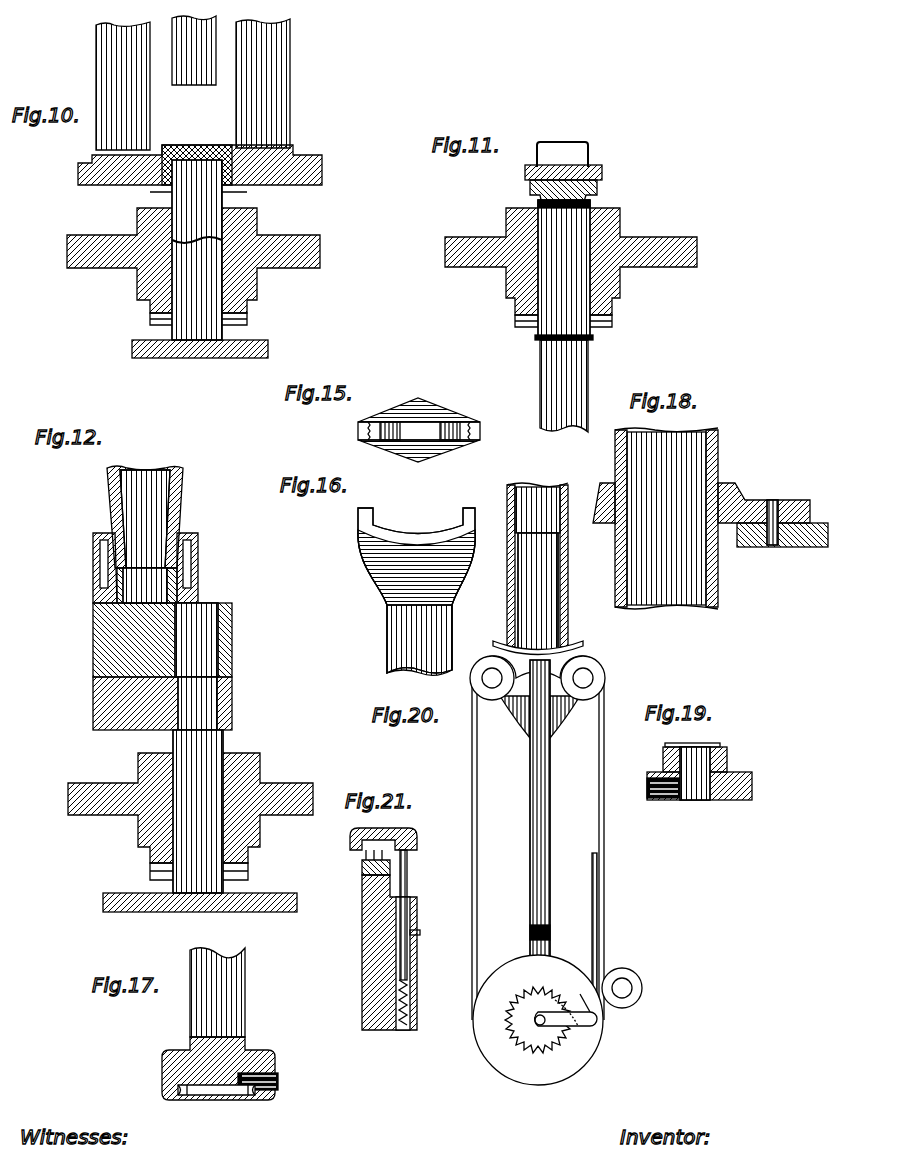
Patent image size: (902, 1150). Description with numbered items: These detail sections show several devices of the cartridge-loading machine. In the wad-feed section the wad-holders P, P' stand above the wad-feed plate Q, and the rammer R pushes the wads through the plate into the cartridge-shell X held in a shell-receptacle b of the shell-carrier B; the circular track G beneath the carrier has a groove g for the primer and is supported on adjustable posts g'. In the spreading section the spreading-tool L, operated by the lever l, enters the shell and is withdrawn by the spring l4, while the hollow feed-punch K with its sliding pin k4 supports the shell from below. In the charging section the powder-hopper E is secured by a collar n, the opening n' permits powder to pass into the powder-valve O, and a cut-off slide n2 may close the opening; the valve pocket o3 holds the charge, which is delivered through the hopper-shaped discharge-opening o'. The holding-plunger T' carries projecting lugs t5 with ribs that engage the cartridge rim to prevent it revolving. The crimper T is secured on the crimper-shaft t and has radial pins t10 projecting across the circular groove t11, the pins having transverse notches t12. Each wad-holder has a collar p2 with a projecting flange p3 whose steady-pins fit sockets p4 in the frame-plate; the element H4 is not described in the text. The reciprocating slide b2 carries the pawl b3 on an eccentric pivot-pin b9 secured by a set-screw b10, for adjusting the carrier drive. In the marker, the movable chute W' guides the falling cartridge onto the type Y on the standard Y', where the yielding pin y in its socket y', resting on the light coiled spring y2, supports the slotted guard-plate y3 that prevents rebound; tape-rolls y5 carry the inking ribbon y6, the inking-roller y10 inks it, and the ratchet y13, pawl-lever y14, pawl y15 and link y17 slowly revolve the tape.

In FIG. 10, the wad-holder P is at (123, 86).
In FIG. 18, the wad-holder P is at (666, 518).
In FIG. 10, the rammer R is at (195, 80).
In FIG. 10, the wad-holder P' is at (275, 83).
In FIG. 10, the wad-feed plate Q is at (300, 160).
In FIG. 10, the adjustable posts g' is at (197, 143).
In FIG. 10, the groove g is at (175, 291).
In FIG. 12, the groove g is at (203, 917).
In FIG. 10, the shell-carrier B is at (298, 237).
In FIG. 11, the shell-carrier B is at (680, 268).
In FIG. 12, the shell-carrier B is at (292, 785).
In FIG. 10, the shell-receptacles b is at (150, 292).
In FIG. 11, the shell-receptacles b is at (512, 290).
In FIG. 12, the shell-receptacles b is at (140, 836).
In FIG. 10, the cartridge-shell X is at (197, 250).
In FIG. 11, the cartridge-shell X is at (564, 268).
In FIG. 12, the cartridge-shell X is at (198, 811).
In FIG. 20, the cartridge-shell X is at (538, 591).
In FIG. 10, the circular track G is at (228, 360).
In FIG. 12, the circular track G is at (185, 912).
In FIG. 11, the spring l4 is at (576, 142).
In FIG. 11, the lever l is at (600, 170).
In FIG. 11, the spreading-tool L is at (598, 186).
In FIG. 11, the sliding pin k4 is at (592, 338).
In FIG. 11, the feed-punch K is at (564, 386).
In FIG. 12, the powder-hopper E is at (182, 510).
In FIG. 12, the collar n is at (164, 568).
In FIG. 12, the bushing H4 is at (196, 576).
In FIG. 18, the bushing H4 is at (806, 548).
In FIG. 12, the opening n' is at (187, 585).
In FIG. 12, the cut-off slide n2 is at (94, 596).
In FIG. 12, the powder-valve O is at (233, 640).
In FIG. 12, the measuring pocket o3 is at (210, 662).
In FIG. 12, the discharge-opening o' is at (224, 703).
In FIG. 15, the projecting lugs t5 is at (370, 420).
In FIG. 16, the projecting lugs t5 is at (366, 512).
In FIG. 15, the holding-plunger T' is at (419, 444).
In FIG. 16, the crimper T is at (416, 591).
In FIG. 17, the crimper T is at (240, 1068).
In FIG. 17, the crimper-shaft t is at (246, 1004).
In FIG. 17, the radial screws or pins t10 is at (280, 1082).
In FIG. 17, the circular groove t11 is at (184, 1098).
In FIG. 17, the transverse notches t12 is at (252, 1098).
In FIG. 18, the collar p2 is at (600, 486).
In FIG. 18, the projecting flange p3 is at (746, 500).
In FIG. 18, the sockets p4 is at (773, 548).
In FIG. 19, the pawl b3 is at (728, 760).
In FIG. 19, the eccentric pivot-pin b9 is at (695, 773).
In FIG. 19, the set-screw b10 is at (655, 800).
In FIG. 19, the reciprocating slide b2 is at (722, 800).
In FIG. 20, the movable part of discharge-chute W' is at (523, 565).
In FIG. 20, the type or marker Y is at (538, 818).
In FIG. 21, the type or marker Y is at (352, 870).
In FIG. 20, the slotted guard-plate y3 is at (585, 647).
In FIG. 21, the slotted guard-plate y3 is at (418, 840).
In FIG. 20, the tape-rolls y5 is at (472, 682).
In FIG. 20, the standard Y' is at (524, 837).
In FIG. 21, the standard Y' is at (367, 952).
In FIG. 20, the inking tape or ribbon y6 is at (477, 870).
In FIG. 20, the link or rod y17 is at (598, 900).
In FIG. 20, the inking-roller y10 is at (642, 986).
In FIG. 20, the pawl y15 is at (575, 1003).
In FIG. 20, the ratchet y13 is at (562, 1030).
In FIG. 20, the pawl-lever y14 is at (546, 1046).
In FIG. 21, the yielding pin or rod y is at (398, 915).
In FIG. 21, the socket y' is at (424, 1002).
In FIG. 21, the coiled spring y2 is at (404, 1031).